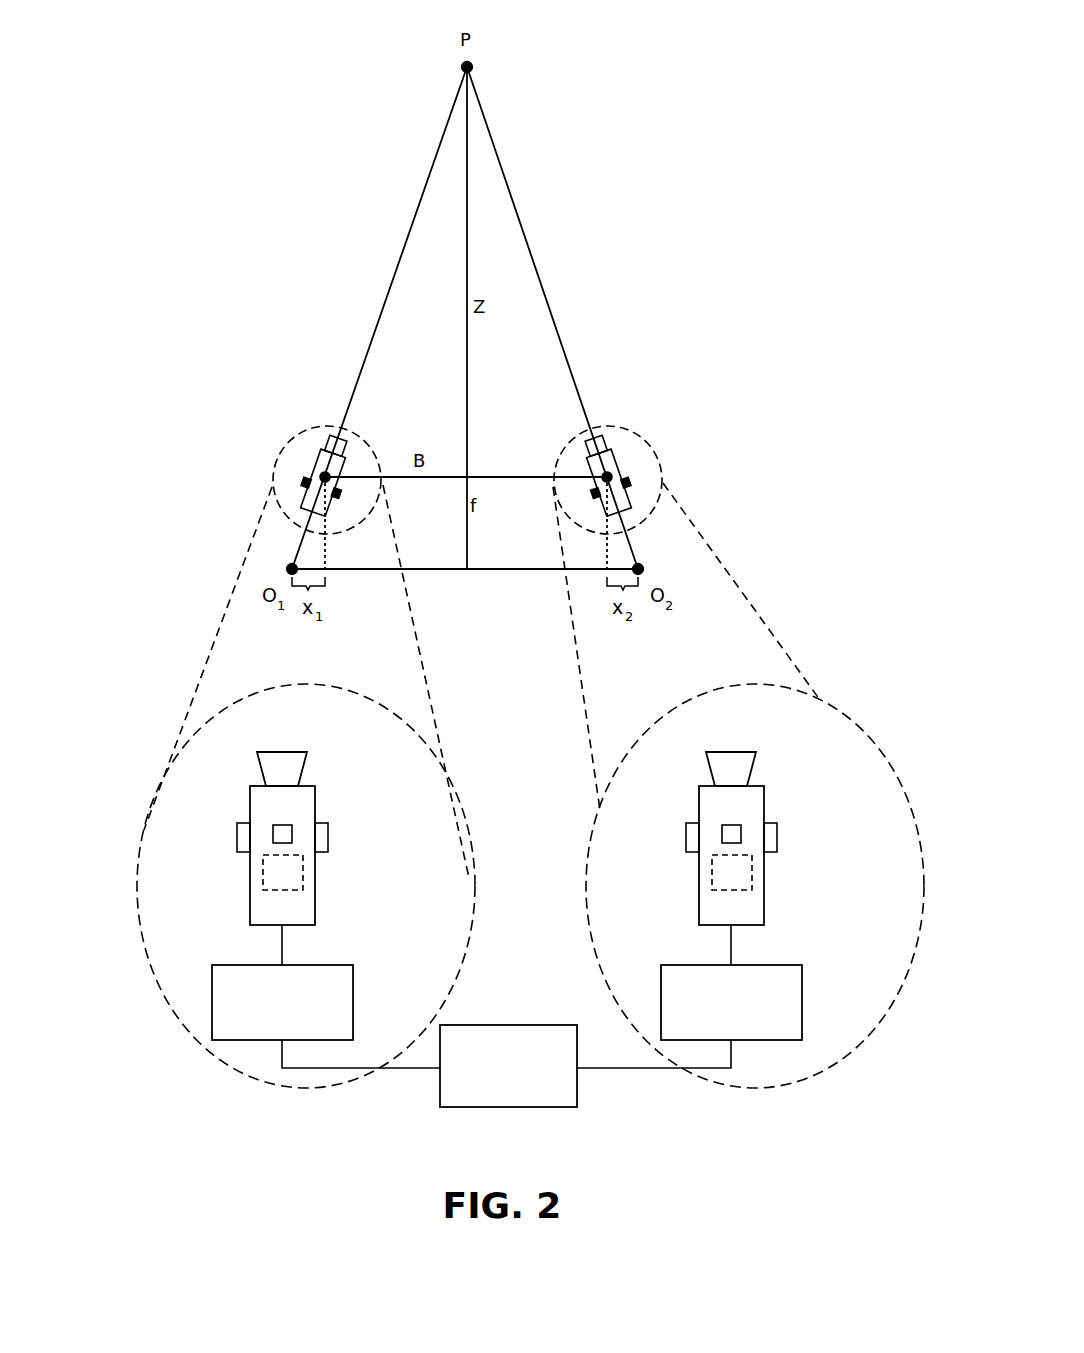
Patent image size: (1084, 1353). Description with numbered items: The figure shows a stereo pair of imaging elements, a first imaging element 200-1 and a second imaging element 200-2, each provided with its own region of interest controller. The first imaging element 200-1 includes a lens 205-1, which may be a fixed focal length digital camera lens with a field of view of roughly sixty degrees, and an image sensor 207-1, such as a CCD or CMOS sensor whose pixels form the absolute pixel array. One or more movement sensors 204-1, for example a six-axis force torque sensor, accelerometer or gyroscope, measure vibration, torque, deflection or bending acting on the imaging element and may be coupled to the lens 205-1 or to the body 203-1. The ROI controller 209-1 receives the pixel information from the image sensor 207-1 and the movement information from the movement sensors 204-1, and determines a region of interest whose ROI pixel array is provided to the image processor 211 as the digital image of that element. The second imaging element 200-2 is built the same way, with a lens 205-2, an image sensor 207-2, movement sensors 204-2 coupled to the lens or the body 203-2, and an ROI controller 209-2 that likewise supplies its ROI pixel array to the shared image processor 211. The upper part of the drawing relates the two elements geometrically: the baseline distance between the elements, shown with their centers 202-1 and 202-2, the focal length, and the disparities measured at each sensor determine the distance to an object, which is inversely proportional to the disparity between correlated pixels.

The first imaging element 200-1 is at (323, 450).
The second imaging element 200-2 is at (609, 450).
The first camera optical center 202-1 is at (312, 470).
The second camera optical center 202-2 is at (620, 470).
The body 203-1 is at (304, 916).
The body 203-2 is at (753, 916).
The movement sensors 204-1 is at (304, 483).
The movement sensors 204-2 is at (628, 483).
The lens 205-1 is at (300, 763).
The lens 205-2 is at (749, 763).
The image sensor 207-1 is at (292, 873).
The image sensor 207-2 is at (741, 873).
The region of interest controller 209-1 is at (353, 992).
The region of interest controller 209-2 is at (802, 992).
The image processor 211 is at (508, 1066).